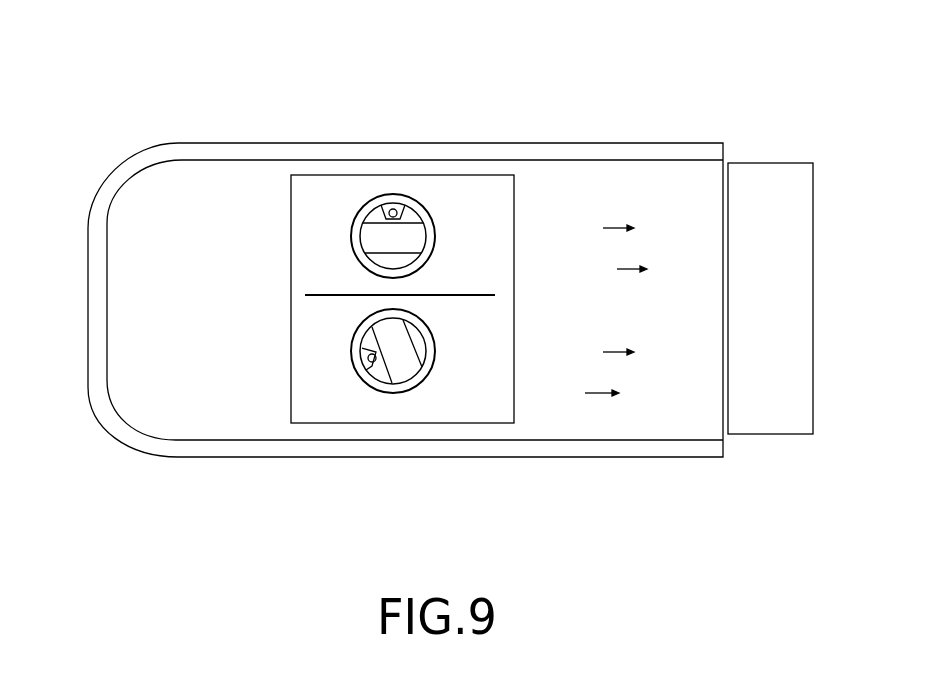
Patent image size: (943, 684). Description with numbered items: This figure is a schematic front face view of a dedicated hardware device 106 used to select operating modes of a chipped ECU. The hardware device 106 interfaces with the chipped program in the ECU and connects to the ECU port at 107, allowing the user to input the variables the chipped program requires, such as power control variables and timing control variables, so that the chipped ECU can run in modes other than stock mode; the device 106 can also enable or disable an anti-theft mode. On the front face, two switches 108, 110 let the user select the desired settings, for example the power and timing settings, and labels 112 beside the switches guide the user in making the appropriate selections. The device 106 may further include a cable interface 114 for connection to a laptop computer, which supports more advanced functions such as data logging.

The dedicated hardware device 106 is at (522, 89).
The connection to ECU port 107 is at (782, 421).
The switch 108 is at (414, 195).
The switch 110 is at (415, 398).
The labels 112 is at (627, 425).
The cable interface 114 is at (88, 360).